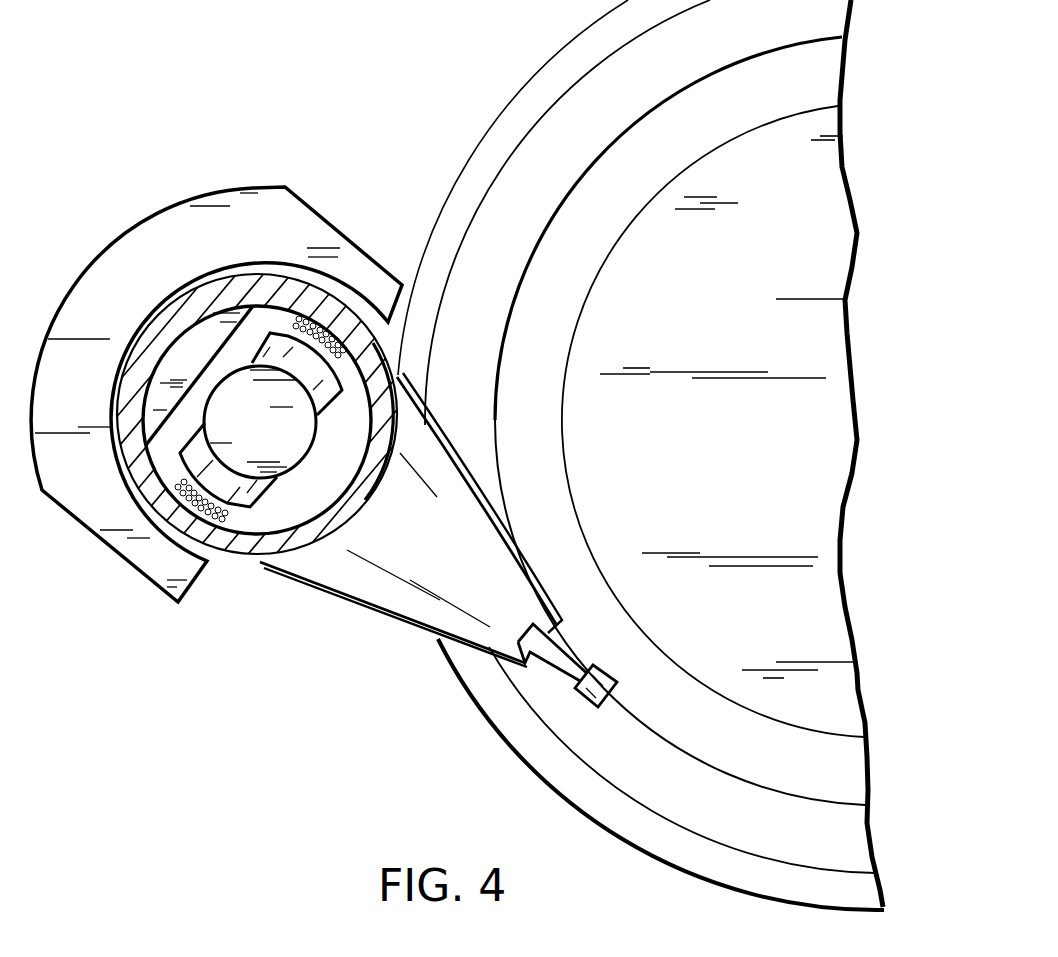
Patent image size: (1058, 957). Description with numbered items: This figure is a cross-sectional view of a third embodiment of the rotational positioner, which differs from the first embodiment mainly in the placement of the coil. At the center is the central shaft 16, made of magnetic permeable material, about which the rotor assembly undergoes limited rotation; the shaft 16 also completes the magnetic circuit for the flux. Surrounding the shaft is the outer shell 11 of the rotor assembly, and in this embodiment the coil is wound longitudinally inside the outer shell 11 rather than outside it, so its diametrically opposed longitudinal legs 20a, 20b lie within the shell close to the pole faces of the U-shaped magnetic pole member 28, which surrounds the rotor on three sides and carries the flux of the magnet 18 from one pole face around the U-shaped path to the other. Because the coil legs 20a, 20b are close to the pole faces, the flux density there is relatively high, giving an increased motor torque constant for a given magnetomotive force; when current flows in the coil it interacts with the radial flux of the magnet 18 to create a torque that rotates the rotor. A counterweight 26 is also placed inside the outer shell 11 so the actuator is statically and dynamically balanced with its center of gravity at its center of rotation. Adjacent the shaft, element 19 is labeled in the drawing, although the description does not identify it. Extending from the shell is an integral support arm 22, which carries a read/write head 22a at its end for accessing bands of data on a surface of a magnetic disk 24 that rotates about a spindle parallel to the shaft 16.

The outer shell 11 is at (231, 297).
The central shaft 16 is at (295, 447).
The magnet 18 is at (338, 395).
The clearance gap 19 is at (196, 452).
The longitudinal leg of the coil 20a is at (252, 505).
The longitudinal leg of the coil 20b is at (334, 354).
The support arm 22 is at (477, 595).
The read/write head 22a is at (613, 690).
The magnetic disk 24 is at (768, 243).
The counterweight 26 is at (205, 367).
The U-shaped magnetic pole member 28 is at (134, 310).